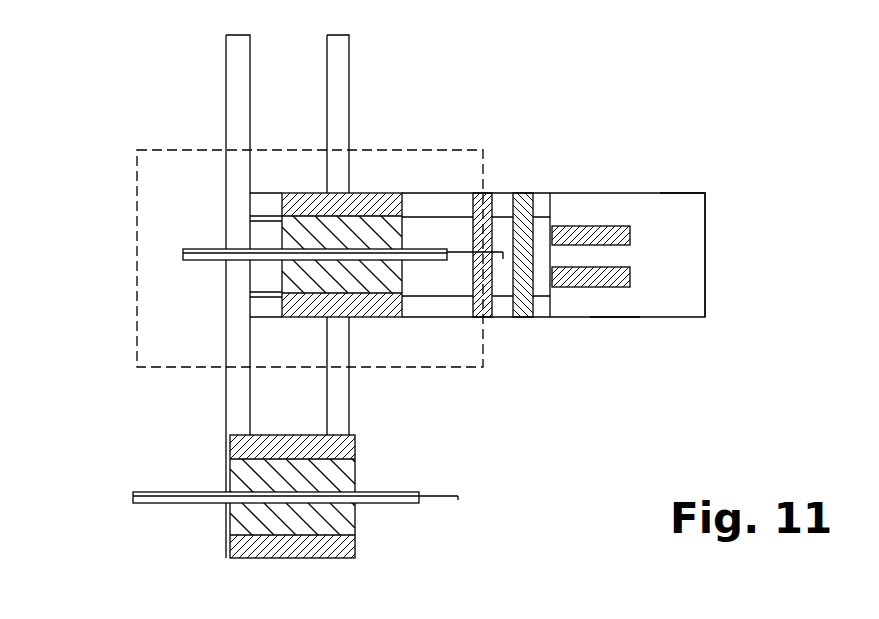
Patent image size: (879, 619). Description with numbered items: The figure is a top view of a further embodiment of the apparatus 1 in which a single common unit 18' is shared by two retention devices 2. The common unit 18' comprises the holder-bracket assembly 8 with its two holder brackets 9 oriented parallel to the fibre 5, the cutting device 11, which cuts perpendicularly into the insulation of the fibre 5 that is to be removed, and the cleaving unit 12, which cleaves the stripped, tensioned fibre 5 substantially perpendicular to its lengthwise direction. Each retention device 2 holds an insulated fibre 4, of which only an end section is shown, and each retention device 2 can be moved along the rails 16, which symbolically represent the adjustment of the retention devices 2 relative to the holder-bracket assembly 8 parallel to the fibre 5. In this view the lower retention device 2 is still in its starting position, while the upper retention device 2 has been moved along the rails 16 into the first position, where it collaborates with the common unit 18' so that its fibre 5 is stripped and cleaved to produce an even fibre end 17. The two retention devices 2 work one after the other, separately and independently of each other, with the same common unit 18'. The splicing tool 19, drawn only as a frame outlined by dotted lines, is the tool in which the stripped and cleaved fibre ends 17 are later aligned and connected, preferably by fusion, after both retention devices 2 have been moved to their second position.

The apparatus 1 is at (721, 105).
The retention device 2 is at (393, 190).
The insulated fibre 4 is at (209, 247).
The fibre 5 is at (462, 262).
The holder-bracket assembly 8 is at (686, 297).
The holder bracket 9 is at (631, 237).
The cutting device 11 is at (532, 189).
The cleaving unit 12 is at (491, 189).
The rail 16 is at (237, 100).
The fibre end 17 is at (505, 258).
The common unit 18' is at (614, 393).
The splicing tool 19 is at (137, 328).